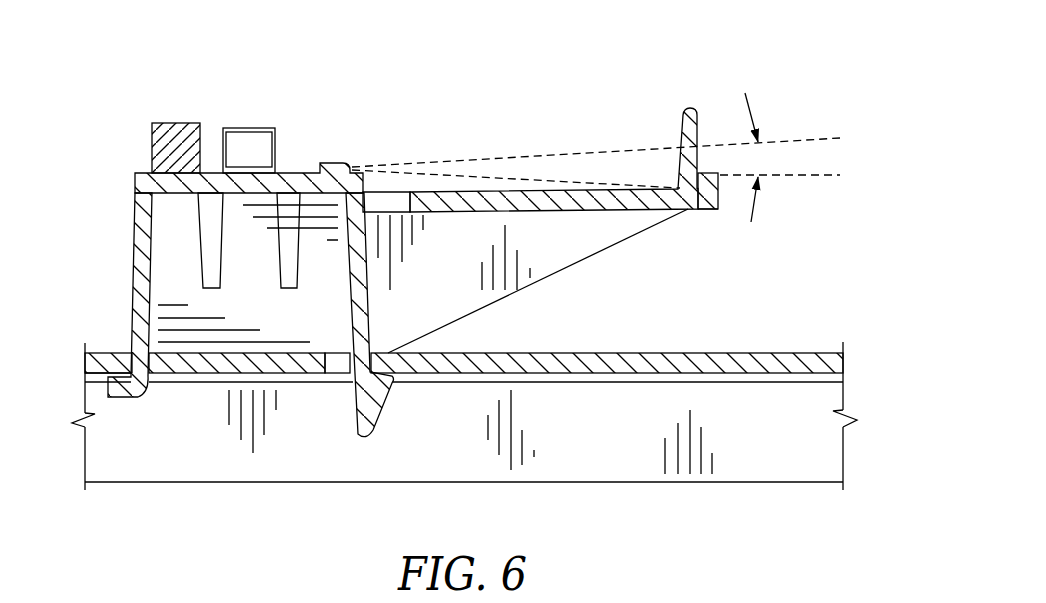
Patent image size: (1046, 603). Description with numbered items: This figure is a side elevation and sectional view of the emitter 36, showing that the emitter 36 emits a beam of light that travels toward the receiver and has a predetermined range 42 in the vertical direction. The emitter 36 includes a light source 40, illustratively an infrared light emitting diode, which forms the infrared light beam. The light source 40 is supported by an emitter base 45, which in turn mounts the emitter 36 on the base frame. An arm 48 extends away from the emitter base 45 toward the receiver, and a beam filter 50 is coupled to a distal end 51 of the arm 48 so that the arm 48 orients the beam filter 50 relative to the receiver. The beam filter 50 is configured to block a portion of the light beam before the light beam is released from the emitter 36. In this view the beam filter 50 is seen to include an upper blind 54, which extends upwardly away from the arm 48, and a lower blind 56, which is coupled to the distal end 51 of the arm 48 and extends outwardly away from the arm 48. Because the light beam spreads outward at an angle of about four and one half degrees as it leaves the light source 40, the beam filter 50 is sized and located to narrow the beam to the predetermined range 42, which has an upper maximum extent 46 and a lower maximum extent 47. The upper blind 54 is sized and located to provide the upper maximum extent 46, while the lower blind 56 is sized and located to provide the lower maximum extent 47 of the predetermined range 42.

The emitter 36 is at (122, 132).
The light source 40 is at (302, 153).
The predetermined range 42 is at (752, 118).
The emitter base 45 is at (120, 265).
The upper maximum extent 46 is at (840, 138).
The lower maximum extent 47 is at (840, 175).
The arm 48 is at (530, 196).
The beam filter 50 is at (766, 164).
The distal end 51 is at (745, 248).
The upper blind 54 is at (680, 122).
The lower blind 56 is at (727, 205).